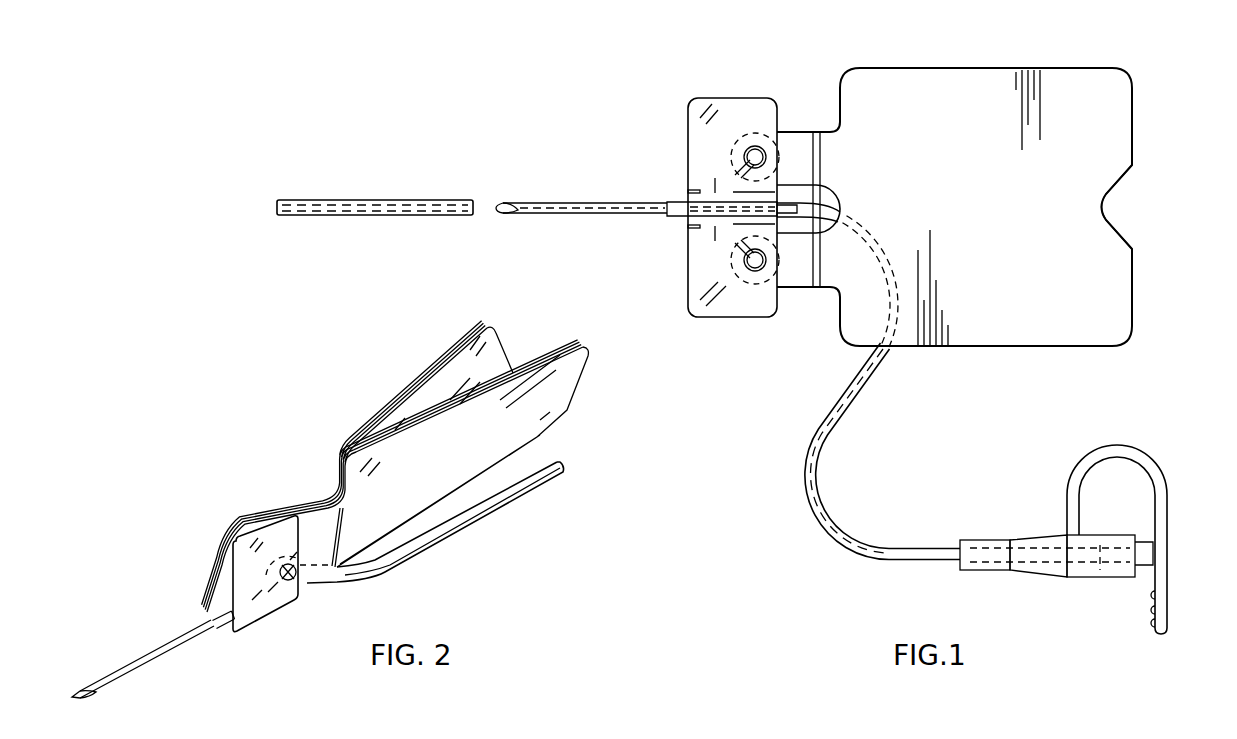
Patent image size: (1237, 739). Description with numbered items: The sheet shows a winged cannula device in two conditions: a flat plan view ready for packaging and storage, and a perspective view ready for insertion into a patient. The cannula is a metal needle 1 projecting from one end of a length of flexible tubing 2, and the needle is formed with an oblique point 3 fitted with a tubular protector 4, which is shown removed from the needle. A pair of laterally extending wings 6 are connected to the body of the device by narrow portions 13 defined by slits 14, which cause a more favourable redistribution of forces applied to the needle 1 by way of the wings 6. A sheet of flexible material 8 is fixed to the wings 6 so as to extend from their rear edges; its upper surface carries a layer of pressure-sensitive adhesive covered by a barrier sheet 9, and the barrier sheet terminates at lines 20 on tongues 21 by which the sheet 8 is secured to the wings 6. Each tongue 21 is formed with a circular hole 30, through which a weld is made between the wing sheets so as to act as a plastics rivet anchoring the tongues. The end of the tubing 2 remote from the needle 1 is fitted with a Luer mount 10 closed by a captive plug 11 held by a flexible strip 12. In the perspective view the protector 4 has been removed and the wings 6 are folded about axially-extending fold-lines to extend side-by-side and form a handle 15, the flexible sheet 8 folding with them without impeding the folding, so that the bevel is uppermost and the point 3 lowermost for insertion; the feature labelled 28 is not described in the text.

In FIG. 1, the metal needle 1 is at (564, 204).
In FIG. 2, the metal needle 1 is at (185, 640).
In FIG. 1, the flexible tubing 2 is at (838, 404).
In FIG. 2, the flexible tubing 2 is at (472, 520).
In FIG. 1, the oblique point 3 is at (503, 203).
In FIG. 2, the oblique point 3 is at (72, 694).
In FIG. 1, the tubular protector 4 is at (405, 201).
In FIG. 1, the wings 6 is at (688, 131).
In FIG. 2, the wings 6 is at (222, 568).
In FIG. 1, the sheet of flexible material 8 is at (941, 64).
In FIG. 2, the sheet of flexible material 8 is at (500, 358).
In FIG. 1, the barrier sheet 9 is at (1076, 130).
In FIG. 1, the Luer mount 10 is at (1062, 576).
In FIG. 1, the captive plug 11 is at (1143, 566).
In FIG. 1, the flexible strip 12 is at (1148, 463).
In FIG. 1, the narrow portions 13 is at (715, 192).
In FIG. 1, the slits 14 is at (688, 191).
In FIG. 2, the handle 15 is at (244, 525).
In FIG. 1, the lines 20 is at (815, 130).
In FIG. 1, the tongues 21 is at (788, 130).
In FIG. 1, the notch 28 is at (1106, 197).
In FIG. 1, the circular hole 30 is at (755, 155).